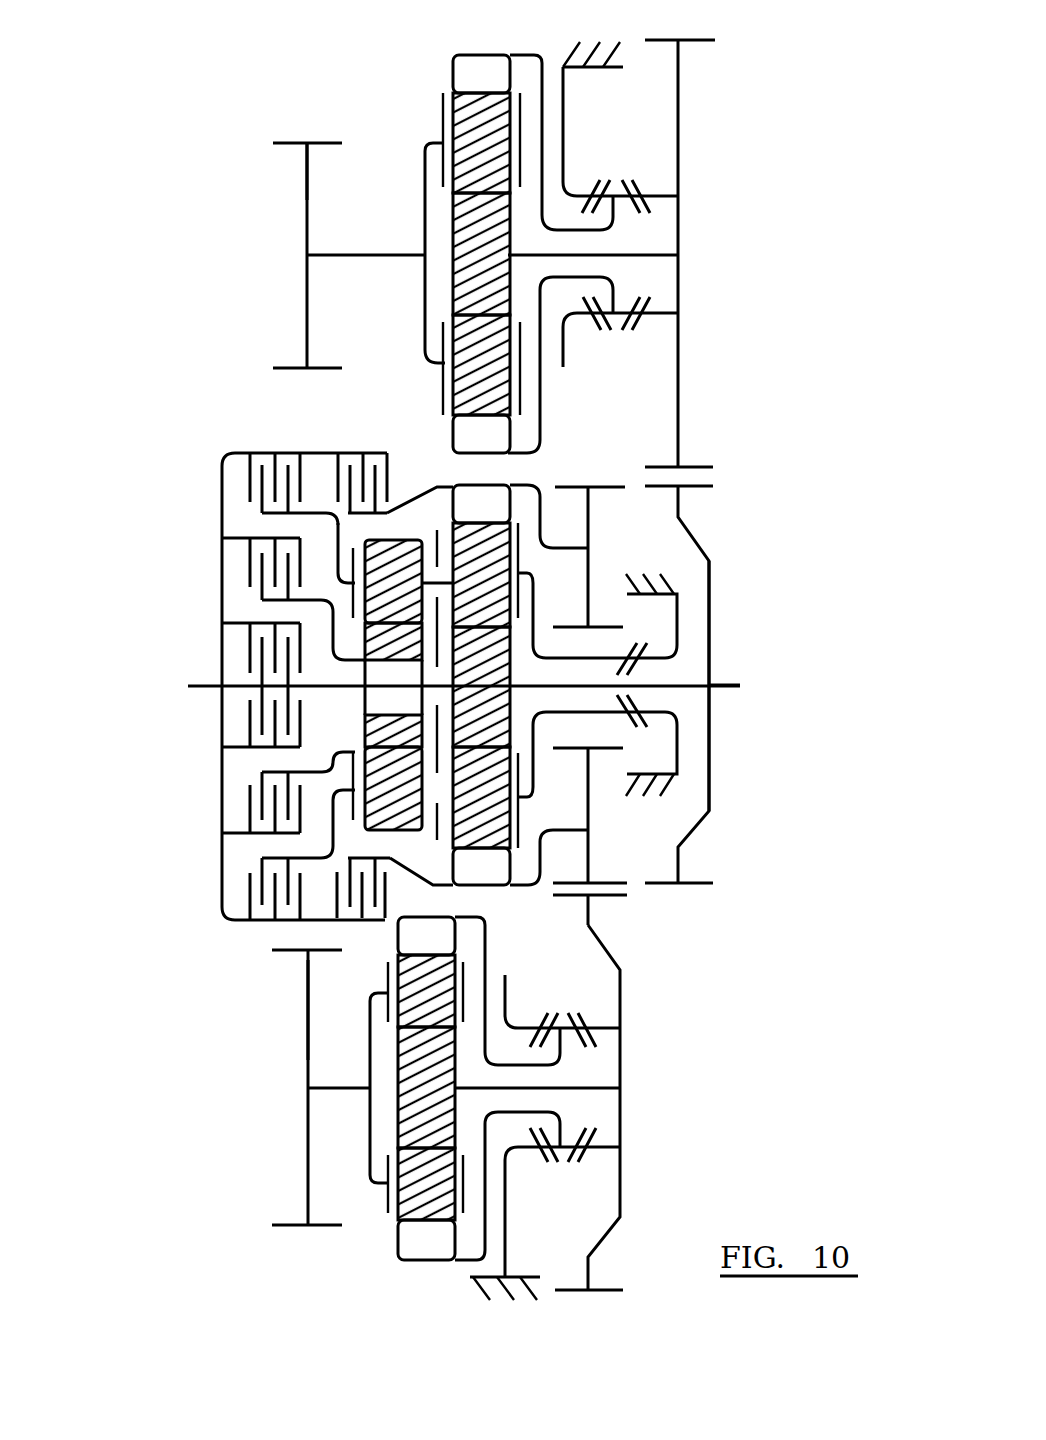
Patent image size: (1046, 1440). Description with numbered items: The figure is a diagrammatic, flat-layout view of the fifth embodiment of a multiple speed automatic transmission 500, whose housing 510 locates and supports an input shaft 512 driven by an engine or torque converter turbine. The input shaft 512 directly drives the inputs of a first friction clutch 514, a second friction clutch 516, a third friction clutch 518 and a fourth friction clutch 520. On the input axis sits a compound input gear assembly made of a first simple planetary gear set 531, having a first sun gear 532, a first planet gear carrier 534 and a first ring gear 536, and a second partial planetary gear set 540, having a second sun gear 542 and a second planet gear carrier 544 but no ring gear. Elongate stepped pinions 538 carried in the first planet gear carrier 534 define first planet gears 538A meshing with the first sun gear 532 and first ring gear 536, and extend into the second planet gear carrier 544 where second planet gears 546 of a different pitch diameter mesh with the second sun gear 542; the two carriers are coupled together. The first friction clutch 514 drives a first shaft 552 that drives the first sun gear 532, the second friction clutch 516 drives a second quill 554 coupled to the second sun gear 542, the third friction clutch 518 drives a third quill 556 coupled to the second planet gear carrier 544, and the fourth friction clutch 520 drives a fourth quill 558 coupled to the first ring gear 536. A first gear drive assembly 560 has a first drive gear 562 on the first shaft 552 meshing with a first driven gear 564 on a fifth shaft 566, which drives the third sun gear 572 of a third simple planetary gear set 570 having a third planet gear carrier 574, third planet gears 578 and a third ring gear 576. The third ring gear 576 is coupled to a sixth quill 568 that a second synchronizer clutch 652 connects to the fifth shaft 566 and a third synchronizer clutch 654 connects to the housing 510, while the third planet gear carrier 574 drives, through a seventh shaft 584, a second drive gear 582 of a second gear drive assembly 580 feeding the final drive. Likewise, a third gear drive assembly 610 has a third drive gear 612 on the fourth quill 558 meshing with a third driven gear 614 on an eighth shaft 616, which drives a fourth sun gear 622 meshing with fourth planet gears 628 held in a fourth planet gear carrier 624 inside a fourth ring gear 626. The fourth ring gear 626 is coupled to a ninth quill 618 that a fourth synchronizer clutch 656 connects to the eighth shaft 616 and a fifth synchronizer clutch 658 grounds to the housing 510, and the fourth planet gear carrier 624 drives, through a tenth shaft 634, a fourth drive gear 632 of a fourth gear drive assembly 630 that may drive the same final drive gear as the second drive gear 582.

The multiple speed automatic transmission 500 is at (255, 104).
The housing 510 is at (576, 64).
The input shaft 512 is at (207, 686).
The first friction clutch 514 is at (275, 630).
The second friction clutch 516 is at (353, 780).
The third friction clutch 518 is at (281, 487).
The fourth friction clutch 520 is at (364, 914).
The first simple planetary gear set 531 is at (562, 468).
The first sun gear 532 is at (496, 687).
The first planet gear carrier 534 is at (512, 601).
The first ring gear 536 is at (483, 870).
The stepped pinion 538 is at (430, 570).
The first planet gear 538A is at (564, 554).
The second partial planetary gear set 540 is at (411, 444).
The second sun gear 542 is at (357, 734).
The second planet gear carrier 544 is at (302, 827).
The second planet gear 546 is at (357, 553).
The first shaft or drive member 552 is at (726, 686).
The second quill or drive tube 554 is at (325, 752).
The third quill or drive tube 556 is at (312, 498).
The fourth quill or drive tube 558 is at (540, 903).
The first gear drive assembly 560 is at (732, 80).
The first drive gear 562 is at (710, 590).
The first driven gear 564 is at (678, 347).
The fifth shaft or drive member 566 is at (660, 255).
The sixth quill or drive tube 568 is at (606, 288).
The third simple planetary gear set 570 is at (408, 76).
The third sun gear 572 is at (470, 242).
The third planet gear carrier 574 is at (522, 118).
The third ring gear 576 is at (480, 66).
The third planet gears 578 is at (473, 134).
The second gear drive assembly 580 is at (245, 189).
The second drive gear 582 is at (316, 143).
The seventh shaft or drive member 584 is at (328, 255).
The third gear drive assembly 610 is at (720, 984).
The third drive gear 612 is at (596, 857).
The third driven gear 614 is at (620, 1015).
The eighth shaft or drive member 616 is at (588, 1088).
The ninth quill or drive tube 618 is at (487, 1218).
The fourth sun gear 622 is at (421, 1106).
The fourth planet gear carrier 624 is at (389, 1207).
The fourth ring gear 626 is at (420, 1244).
The fourth planet gears 628 is at (440, 1188).
The fourth gear drive assembly 630 is at (240, 1158).
The fourth drive gear 632 is at (306, 1004).
The tenth shaft or drive member 634 is at (330, 1088).
The second synchronizer clutch 652 is at (640, 192).
The third synchronizer clutch 654 is at (598, 332).
The fourth synchronizer clutch 656 is at (580, 1016).
The fifth synchronizer clutch 658 is at (540, 1160).